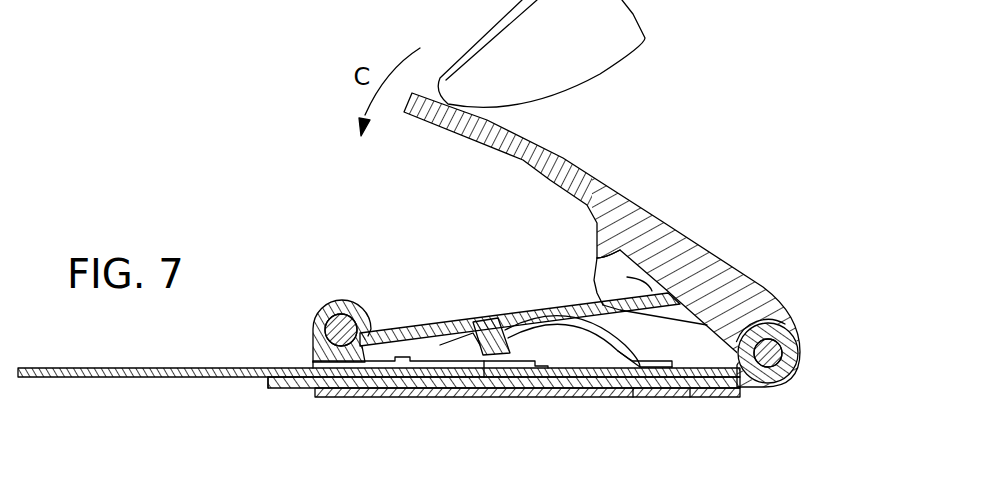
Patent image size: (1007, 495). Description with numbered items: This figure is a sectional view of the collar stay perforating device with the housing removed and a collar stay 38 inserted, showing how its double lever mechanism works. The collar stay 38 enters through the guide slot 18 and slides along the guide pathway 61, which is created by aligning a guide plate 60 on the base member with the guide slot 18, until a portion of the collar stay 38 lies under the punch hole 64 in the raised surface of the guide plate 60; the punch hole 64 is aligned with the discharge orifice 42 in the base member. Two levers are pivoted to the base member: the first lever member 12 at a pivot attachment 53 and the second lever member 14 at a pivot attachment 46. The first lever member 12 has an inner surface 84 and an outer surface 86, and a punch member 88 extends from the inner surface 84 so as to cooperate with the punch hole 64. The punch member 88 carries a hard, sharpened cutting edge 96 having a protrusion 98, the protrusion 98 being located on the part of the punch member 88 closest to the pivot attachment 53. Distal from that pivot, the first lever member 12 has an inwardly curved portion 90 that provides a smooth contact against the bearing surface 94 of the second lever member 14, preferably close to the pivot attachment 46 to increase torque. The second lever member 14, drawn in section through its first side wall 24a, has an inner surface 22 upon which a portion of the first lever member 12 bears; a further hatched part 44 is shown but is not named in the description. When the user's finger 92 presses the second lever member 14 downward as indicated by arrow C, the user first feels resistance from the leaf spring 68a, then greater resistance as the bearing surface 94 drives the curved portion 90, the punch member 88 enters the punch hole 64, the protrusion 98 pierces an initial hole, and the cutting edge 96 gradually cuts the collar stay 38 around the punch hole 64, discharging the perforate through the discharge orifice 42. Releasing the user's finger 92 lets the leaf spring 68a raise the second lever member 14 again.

The second lever member 14 is at (595, 192).
The user's finger 92 is at (570, 53).
The inner surface 22 is at (570, 214).
The bearing surface 94 is at (599, 257).
The curved portion 90 is at (627, 277).
The outer surface 86 is at (433, 309).
The first lever member 12 is at (388, 332).
The pivot attachment 53 is at (306, 312).
The guide plate 60 is at (313, 362).
The collar stay 38 is at (74, 378).
The guide slot 18 is at (270, 381).
The guide pathway 61 is at (326, 380).
The fastener strip 44 is at (361, 395).
The protrusion 98 is at (458, 378).
The discharge orifice 42 is at (496, 380).
The punch hole 64 is at (484, 380).
The cutting edge 96 is at (530, 381).
The punch member 88 is at (522, 346).
The inner surface 84 is at (601, 322).
The leaf spring 68a is at (619, 354).
The first side wall 24a is at (705, 340).
The pivot attachment 46 is at (809, 370).